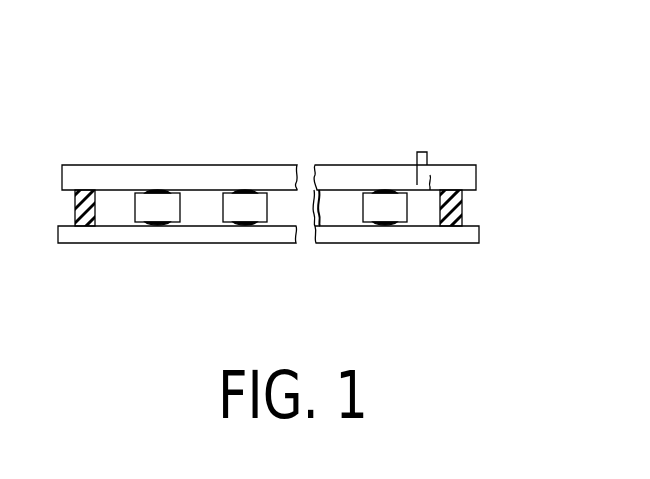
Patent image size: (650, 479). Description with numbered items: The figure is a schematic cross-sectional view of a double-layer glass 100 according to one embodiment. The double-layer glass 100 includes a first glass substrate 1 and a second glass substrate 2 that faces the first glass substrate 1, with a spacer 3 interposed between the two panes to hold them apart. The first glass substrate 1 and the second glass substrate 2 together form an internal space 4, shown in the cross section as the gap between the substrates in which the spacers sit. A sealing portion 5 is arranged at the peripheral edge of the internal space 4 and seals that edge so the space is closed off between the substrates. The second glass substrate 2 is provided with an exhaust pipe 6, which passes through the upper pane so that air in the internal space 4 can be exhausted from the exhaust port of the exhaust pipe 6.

The double-layer glass 100 is at (158, 126).
The first glass substrate 1 is at (270, 237).
The second glass substrate 2 is at (262, 182).
The spacer 3 is at (180, 218).
The internal space 4 is at (337, 215).
The sealing portion 5 is at (462, 210).
The exhaust pipe 6 is at (430, 163).